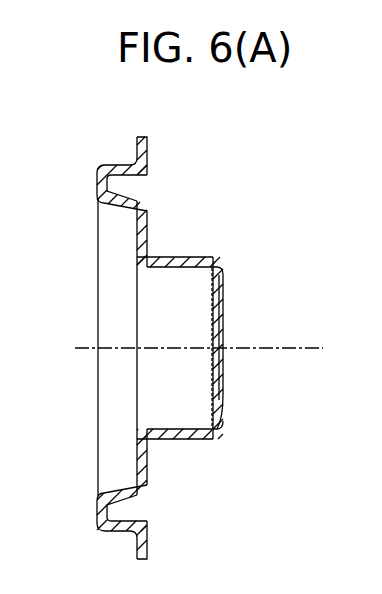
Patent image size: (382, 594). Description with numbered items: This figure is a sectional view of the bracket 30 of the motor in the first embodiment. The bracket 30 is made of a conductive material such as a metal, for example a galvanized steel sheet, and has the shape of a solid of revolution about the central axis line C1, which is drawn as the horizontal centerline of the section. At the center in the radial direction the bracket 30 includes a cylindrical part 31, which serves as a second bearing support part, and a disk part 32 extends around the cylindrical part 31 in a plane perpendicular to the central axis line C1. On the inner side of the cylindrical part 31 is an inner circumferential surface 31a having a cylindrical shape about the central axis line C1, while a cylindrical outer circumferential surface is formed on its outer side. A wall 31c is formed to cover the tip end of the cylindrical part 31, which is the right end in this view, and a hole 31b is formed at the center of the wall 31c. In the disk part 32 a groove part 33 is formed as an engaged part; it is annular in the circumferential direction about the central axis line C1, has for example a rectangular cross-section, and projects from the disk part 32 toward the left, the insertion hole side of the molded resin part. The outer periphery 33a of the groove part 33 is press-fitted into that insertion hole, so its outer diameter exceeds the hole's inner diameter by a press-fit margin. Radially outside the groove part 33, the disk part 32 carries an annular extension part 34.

The bracket 30 is at (86, 153).
The cylindrical part 31 is at (192, 258).
The inner circumferential surface 31a is at (216, 284).
The hole 31b is at (223, 372).
The wall 31c is at (226, 394).
The disk part 32 is at (148, 224).
The groove part 33 is at (110, 180).
The outer periphery 33a is at (122, 163).
The annular extension part 34 is at (148, 141).
The central axis line C1 is at (317, 348).